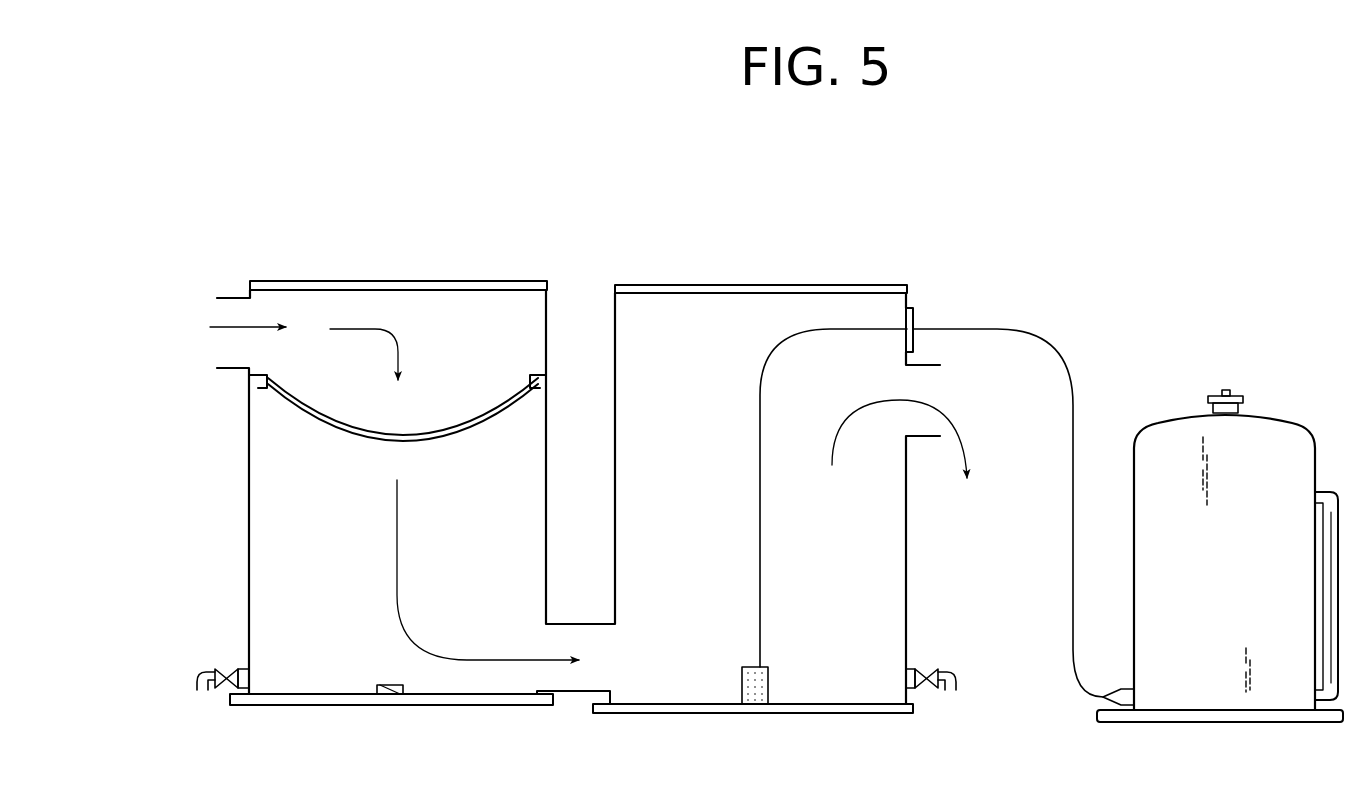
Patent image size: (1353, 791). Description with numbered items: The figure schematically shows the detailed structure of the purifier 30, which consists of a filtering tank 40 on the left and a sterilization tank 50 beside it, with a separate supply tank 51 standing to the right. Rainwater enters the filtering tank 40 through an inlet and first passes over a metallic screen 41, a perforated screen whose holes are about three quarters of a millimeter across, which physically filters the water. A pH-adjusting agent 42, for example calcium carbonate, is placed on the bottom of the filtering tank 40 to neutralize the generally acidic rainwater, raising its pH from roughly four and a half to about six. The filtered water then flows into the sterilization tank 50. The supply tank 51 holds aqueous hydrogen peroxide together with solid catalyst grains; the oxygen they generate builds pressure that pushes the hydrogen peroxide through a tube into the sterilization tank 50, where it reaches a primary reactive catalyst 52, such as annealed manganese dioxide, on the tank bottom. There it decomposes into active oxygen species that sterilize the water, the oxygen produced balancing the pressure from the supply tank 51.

The purifier 30 is at (889, 182).
The filtering tank 40 is at (376, 279).
The metallic screen 41 is at (312, 423).
The pH-adjusting agent 42 is at (388, 697).
The sterilization tank 50 is at (726, 283).
The supply tank 51 is at (1166, 421).
The primary reactive catalyst 52 is at (752, 705).